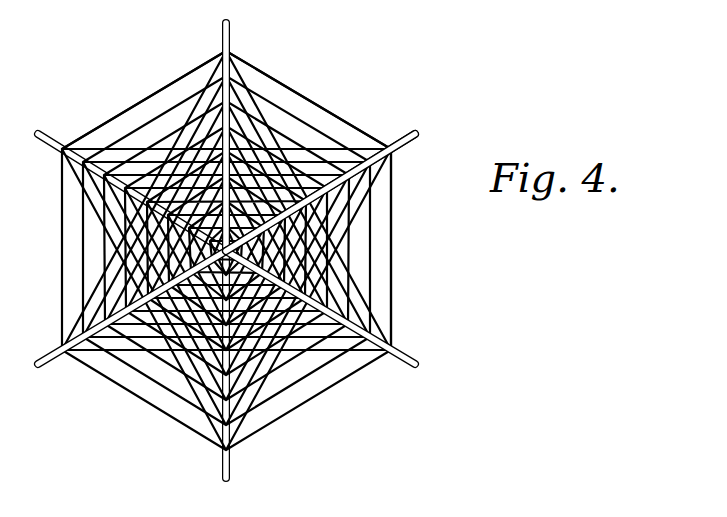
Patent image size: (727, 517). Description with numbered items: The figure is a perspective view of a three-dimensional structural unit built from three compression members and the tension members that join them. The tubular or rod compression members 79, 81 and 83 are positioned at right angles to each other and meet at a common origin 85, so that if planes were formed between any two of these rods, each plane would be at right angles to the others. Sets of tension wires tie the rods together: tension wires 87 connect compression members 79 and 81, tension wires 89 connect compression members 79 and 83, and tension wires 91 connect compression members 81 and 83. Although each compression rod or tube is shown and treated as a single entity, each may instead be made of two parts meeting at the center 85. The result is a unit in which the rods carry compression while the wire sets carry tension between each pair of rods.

The compression member 79 is at (222, 36).
The compression member 81 is at (412, 132).
The compression member 83 is at (408, 368).
The origin 85 is at (90, 360).
The tension wires 87 is at (312, 97).
The tension wires 89 is at (162, 88).
The tension wires 91 is at (393, 262).